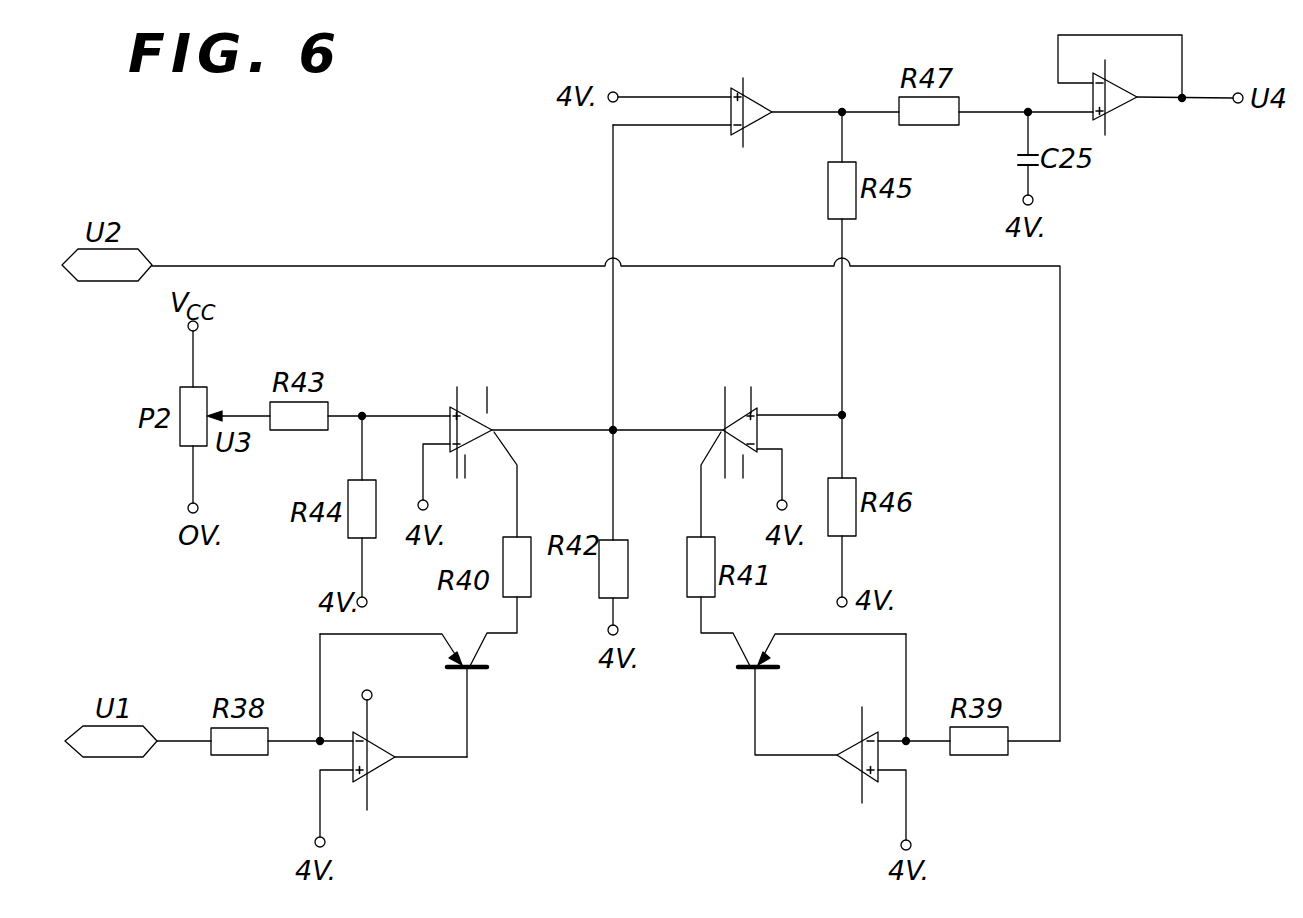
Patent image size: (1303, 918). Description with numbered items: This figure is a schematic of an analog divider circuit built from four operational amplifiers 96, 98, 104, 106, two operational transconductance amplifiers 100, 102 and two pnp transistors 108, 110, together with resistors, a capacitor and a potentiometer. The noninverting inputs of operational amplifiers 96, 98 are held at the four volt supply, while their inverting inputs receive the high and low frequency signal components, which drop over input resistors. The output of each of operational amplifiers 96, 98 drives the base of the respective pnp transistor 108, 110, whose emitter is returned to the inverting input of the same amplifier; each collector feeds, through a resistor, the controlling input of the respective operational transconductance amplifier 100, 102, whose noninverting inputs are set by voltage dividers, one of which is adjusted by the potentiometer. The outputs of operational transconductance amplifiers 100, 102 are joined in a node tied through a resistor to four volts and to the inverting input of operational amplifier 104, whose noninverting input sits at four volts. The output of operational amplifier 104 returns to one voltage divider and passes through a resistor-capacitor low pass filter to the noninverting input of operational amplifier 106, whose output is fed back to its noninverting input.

The operational amplifier 96 is at (382, 766).
The operational amplifier 98 is at (853, 770).
The operational transconductance amplifier 100 is at (485, 423).
The operational transconductance amplifier 102 is at (724, 423).
The operational amplifier 104 is at (757, 100).
The operational amplifier 106 is at (1118, 112).
The pnp transistor 108 is at (475, 671).
The pnp transistor 110 is at (760, 671).